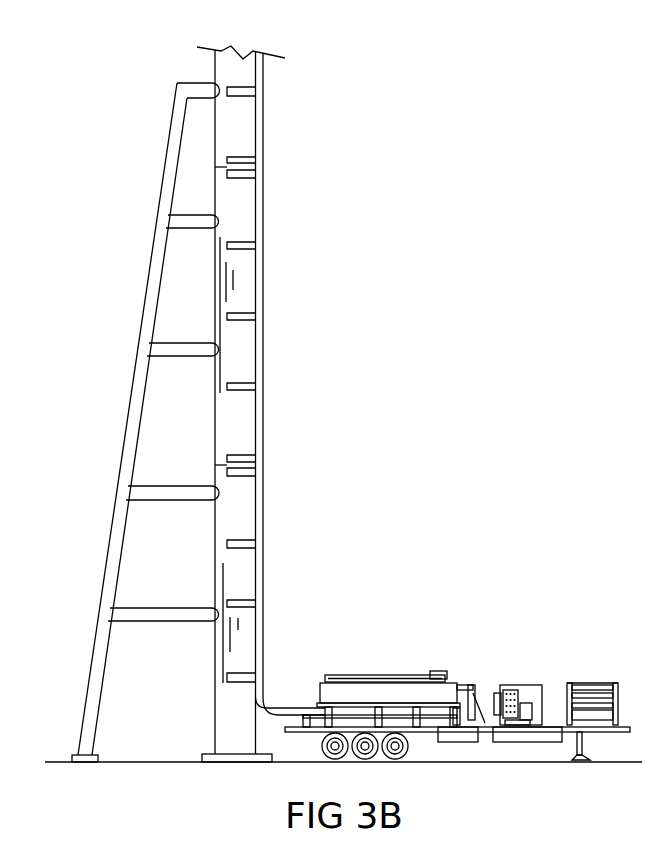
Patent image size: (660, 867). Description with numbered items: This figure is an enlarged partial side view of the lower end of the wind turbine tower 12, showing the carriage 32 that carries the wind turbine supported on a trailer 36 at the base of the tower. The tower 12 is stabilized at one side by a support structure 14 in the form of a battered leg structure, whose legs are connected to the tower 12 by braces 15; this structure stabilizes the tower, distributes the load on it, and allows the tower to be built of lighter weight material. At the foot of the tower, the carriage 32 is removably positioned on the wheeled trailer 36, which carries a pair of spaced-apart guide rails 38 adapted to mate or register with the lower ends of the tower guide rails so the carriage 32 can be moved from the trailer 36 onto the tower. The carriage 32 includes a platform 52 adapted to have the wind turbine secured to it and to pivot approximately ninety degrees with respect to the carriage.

The tower 12 is at (243, 521).
The support structure 14 is at (122, 447).
The braces 15 is at (182, 488).
The carriage 32 is at (457, 673).
The trailer 36 is at (557, 722).
The guide rails 38 is at (282, 707).
The platform 52 is at (343, 678).